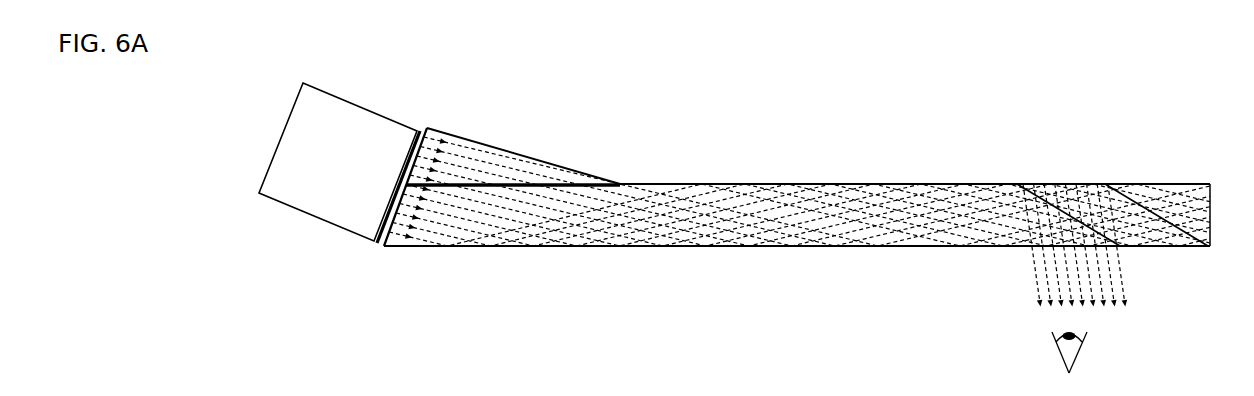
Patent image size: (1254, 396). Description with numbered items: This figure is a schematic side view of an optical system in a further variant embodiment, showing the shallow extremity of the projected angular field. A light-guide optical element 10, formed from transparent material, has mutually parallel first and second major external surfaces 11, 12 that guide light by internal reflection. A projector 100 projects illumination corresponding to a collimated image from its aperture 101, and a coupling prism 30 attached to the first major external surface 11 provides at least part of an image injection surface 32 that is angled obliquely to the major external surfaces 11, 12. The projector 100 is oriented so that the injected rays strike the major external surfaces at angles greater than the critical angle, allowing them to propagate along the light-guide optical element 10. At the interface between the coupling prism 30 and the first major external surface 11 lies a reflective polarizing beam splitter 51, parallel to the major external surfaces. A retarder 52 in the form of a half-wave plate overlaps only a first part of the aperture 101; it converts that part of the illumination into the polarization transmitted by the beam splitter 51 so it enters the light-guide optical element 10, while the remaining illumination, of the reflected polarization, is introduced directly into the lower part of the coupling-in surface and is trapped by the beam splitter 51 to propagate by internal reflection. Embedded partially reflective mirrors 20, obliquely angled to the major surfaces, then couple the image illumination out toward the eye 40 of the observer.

The projector 100 is at (291, 113).
The aperture 101 is at (378, 222).
The retarder 52 is at (422, 131).
The image injection surface 32 is at (427, 128).
The coupling prism 30 is at (490, 146).
The reflective polarizing beam splitter 51 is at (604, 183).
The light-guide optical element 10 is at (838, 244).
The first major external surface 11 is at (697, 183).
The second major external surface 12 is at (690, 248).
The partially reflective mirrors 20 is at (1143, 183).
The eye 40 is at (1052, 357).